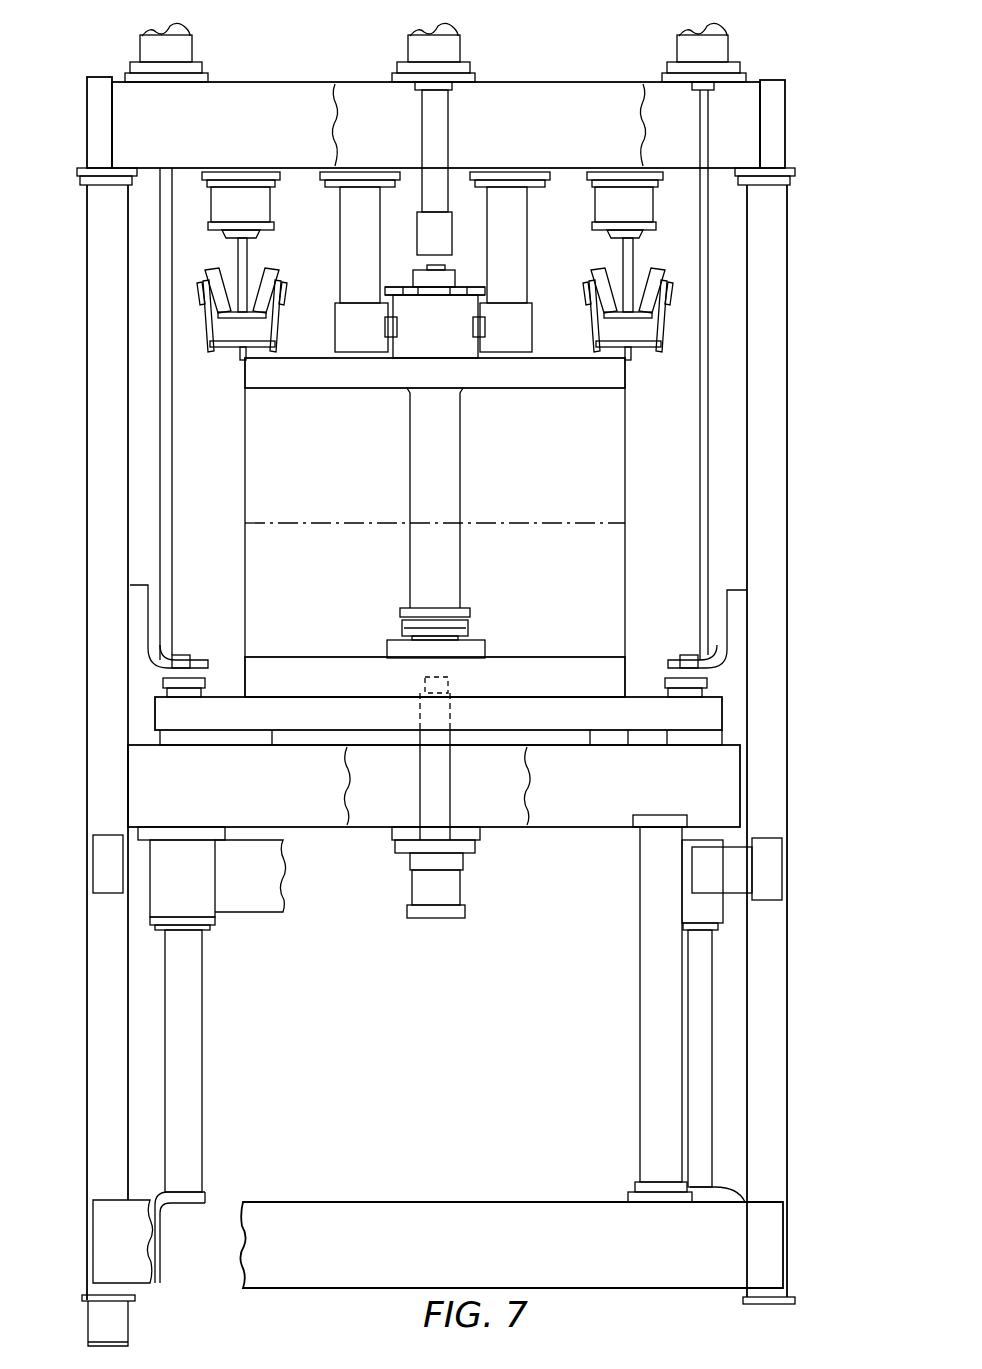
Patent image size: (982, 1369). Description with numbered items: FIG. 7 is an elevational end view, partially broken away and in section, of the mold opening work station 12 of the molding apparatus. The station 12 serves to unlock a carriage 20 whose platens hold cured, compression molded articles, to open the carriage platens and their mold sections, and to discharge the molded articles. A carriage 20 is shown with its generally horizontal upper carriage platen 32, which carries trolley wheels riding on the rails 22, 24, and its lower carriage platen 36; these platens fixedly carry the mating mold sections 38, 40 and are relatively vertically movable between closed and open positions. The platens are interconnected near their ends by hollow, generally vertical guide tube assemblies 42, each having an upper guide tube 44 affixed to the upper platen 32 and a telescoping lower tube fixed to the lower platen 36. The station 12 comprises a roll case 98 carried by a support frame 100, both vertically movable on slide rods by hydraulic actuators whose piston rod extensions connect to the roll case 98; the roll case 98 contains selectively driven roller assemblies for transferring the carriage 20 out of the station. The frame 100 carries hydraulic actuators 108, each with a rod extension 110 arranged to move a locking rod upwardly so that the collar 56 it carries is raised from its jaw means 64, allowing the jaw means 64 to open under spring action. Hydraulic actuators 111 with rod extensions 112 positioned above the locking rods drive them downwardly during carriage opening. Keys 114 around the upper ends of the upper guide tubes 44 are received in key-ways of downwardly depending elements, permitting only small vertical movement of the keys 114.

The work station 12 is at (795, 612).
The carriage 20 is at (435, 400).
The rail 22 is at (632, 258).
The rail 24 is at (247, 263).
The upper carriage platen 32 is at (348, 377).
The lower carriage platen 36 is at (335, 670).
The mold section 38 is at (612, 425).
The mold section 40 is at (658, 555).
The guide tube assembly 42 is at (462, 512).
The upper guide tube 44 is at (420, 503).
The collar 56 is at (455, 280).
The jaw means 64 is at (397, 281).
The roll case 98 is at (638, 710).
The support frame 100 is at (593, 813).
The hydraulic actuator 108 is at (467, 889).
The rod extension 110 is at (447, 715).
The hydraulic actuator 111 is at (458, 32).
The rod extension 112 is at (437, 163).
The key 114 is at (470, 327).